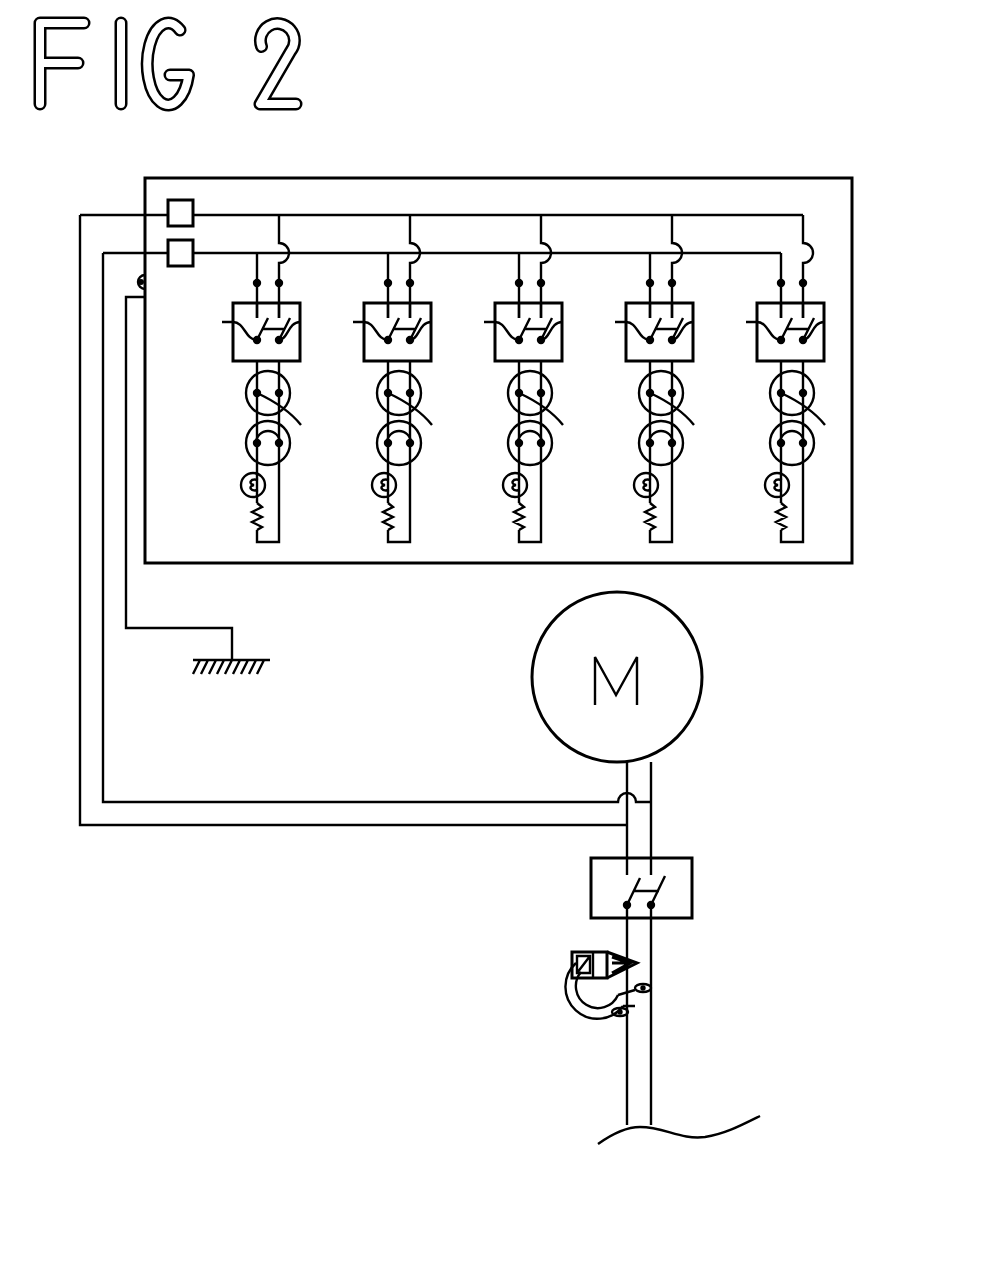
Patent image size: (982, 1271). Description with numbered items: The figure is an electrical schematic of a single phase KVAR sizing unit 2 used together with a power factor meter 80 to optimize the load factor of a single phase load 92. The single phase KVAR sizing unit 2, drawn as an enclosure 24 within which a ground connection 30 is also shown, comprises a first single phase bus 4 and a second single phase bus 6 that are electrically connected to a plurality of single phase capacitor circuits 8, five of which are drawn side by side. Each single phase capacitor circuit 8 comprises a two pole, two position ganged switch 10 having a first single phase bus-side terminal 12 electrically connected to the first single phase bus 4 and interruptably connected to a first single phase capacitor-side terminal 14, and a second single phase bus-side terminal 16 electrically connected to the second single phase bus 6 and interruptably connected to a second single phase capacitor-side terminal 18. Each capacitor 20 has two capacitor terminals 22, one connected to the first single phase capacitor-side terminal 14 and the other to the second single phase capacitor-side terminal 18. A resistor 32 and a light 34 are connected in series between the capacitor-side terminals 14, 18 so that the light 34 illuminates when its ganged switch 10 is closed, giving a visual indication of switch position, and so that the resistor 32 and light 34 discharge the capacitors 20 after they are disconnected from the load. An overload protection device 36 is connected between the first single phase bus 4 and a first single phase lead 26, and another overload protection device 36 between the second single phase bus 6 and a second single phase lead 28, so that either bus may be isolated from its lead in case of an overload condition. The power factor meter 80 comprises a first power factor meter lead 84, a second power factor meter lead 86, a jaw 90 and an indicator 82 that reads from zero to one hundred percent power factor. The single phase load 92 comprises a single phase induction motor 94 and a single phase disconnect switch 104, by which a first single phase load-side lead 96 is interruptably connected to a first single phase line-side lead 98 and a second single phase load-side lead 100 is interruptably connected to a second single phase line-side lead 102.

The single phase KVAR sizing unit 2 is at (642, 130).
The first single phase bus 4 is at (436, 215).
The second single phase bus 6 is at (460, 253).
The single phase capacitor circuit 8 is at (208, 375).
The two pole, two position ganged switch 10 is at (300, 308).
The first single phase bus-side terminal 12 is at (256, 284).
The first single phase capacitor-side terminal 14 is at (490, 325).
The second single phase bus-side terminal 16 is at (281, 284).
The second single phase capacitor-side terminal 18 is at (565, 325).
The capacitor 20 is at (254, 444).
The capacitor terminal 22 is at (281, 444).
The control unit housing 24 is at (410, 566).
The first single phase lead 26 is at (243, 827).
The second single phase lead 28 is at (373, 804).
The ground line 30 is at (127, 597).
The resistor 32 is at (263, 527).
The light 34 is at (266, 486).
The overload protection device 36 is at (193, 210).
The power factor meter 80 is at (526, 947).
The indicator 82 is at (574, 950).
The first power factor meter lead 84 is at (585, 1011).
The second power factor meter lead 86 is at (565, 992).
The jaw 90 is at (618, 953).
The single phase load 92 is at (755, 749).
The single phase induction motor 94 is at (703, 650).
The first single phase load-side lead 96 is at (628, 773).
The first single phase line-side lead 98 is at (628, 1052).
The second single phase load-side lead 100 is at (652, 808).
The second single phase line-side lead 102 is at (652, 1088).
The single phase disconnect switch 104 is at (693, 880).